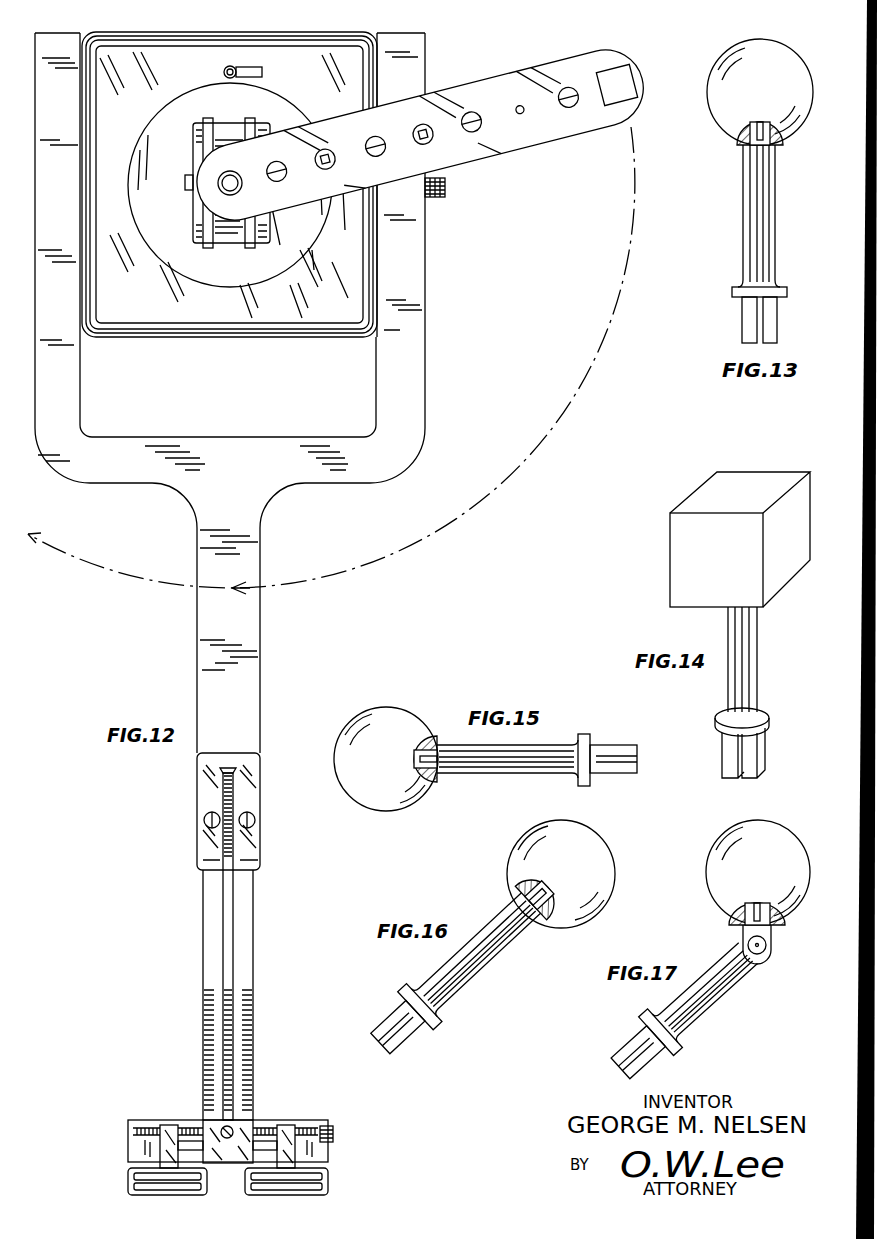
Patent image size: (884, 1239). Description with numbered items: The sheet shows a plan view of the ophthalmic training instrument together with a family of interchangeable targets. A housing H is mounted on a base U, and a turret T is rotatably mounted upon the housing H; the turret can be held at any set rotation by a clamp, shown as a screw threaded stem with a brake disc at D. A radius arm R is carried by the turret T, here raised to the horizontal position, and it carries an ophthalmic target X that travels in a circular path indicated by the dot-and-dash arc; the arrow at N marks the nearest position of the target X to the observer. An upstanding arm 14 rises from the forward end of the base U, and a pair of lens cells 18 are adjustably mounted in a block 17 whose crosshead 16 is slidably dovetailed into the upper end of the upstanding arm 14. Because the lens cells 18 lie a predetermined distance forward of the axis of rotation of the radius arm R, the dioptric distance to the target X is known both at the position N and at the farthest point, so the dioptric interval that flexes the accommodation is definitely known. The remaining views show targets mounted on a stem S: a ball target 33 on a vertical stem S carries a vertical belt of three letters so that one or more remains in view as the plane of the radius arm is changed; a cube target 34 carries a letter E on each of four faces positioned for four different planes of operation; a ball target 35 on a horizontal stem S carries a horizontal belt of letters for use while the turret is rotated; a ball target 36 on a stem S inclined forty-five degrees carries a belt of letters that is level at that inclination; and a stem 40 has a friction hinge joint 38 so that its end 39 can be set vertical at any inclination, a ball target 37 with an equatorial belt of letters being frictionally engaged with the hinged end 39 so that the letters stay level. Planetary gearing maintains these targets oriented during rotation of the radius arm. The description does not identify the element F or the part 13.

In FIG. 12, the screw threaded stem with brake disc D is at (264, 72).
In FIG. 12, the turret T is at (193, 205).
In FIG. 12, the pivot F is at (240, 190).
In FIG. 12, the radius arm R is at (545, 145).
In FIG. 12, the ophthalmic target X is at (612, 103).
In FIG. 12, the knob 13 is at (446, 187).
In FIG. 12, the housing H is at (240, 335).
In FIG. 12, the base U is at (225, 437).
In FIG. 12, the nearest position arrow N is at (331, 372).
In FIG. 12, the upstanding arm 14 is at (203, 975).
In FIG. 12, the crosshead 16 is at (130, 1147).
In FIG. 12, the block 17 is at (229, 1160).
In FIG. 12, the lens cells 18 is at (128, 1179).
In FIG. 13, the ball target 33 is at (728, 133).
In FIG. 14, the cube target 34 is at (670, 548).
In FIG. 15, the ball target 35 is at (418, 802).
In FIG. 16, the ball target 36 is at (512, 853).
In FIG. 17, the ball target 37 is at (712, 900).
In FIG. 17, the friction hinge joint 38 is at (772, 952).
In FIG. 17, the hinged end 39 is at (780, 926).
In FIG. 17, the stem 40 is at (725, 1005).
In FIG. 13, the stem S is at (744, 214).
In FIG. 14, the stem S is at (758, 663).
In FIG. 15, the stem S is at (514, 774).
In FIG. 16, the stem S is at (495, 960).